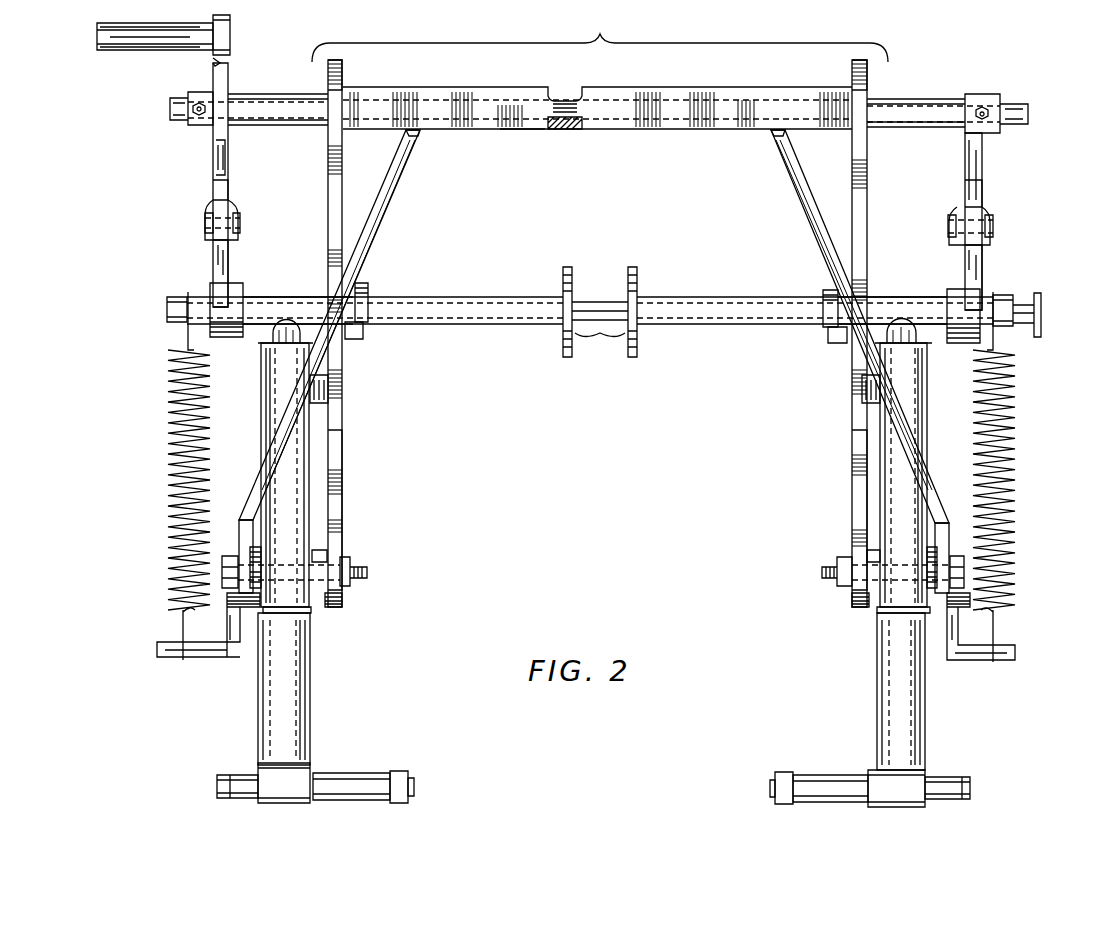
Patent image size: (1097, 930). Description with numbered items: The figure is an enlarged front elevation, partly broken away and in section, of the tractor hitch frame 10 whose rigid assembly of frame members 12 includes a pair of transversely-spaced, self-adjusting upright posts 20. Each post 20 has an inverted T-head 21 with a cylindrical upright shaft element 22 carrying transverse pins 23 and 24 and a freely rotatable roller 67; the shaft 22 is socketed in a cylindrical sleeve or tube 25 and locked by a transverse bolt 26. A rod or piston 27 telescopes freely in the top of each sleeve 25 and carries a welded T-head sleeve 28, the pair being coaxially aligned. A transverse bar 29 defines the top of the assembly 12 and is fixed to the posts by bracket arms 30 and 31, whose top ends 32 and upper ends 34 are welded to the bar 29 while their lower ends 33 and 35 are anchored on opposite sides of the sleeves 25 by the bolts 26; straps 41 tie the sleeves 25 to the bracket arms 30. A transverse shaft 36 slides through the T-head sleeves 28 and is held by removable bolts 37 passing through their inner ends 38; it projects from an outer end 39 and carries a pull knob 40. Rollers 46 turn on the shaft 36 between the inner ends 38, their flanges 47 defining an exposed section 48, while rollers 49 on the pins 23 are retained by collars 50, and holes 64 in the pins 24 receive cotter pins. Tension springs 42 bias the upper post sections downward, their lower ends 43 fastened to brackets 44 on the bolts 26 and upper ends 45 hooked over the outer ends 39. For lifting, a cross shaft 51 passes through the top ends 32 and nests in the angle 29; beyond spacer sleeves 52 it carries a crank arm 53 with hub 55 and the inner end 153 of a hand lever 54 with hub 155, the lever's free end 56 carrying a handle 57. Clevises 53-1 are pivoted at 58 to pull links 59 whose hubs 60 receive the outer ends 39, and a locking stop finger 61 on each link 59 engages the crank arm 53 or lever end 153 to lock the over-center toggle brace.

The tractor hitch frame 10 is at (600, 37).
The assembly of frame members 12 is at (658, 131).
The self-adjusting upright post 20 is at (305, 610).
The inverted T-head 21 is at (312, 775).
The cylindrical upright shaft element 22 is at (310, 669).
The transversely-extending pin 23 is at (415, 783).
The transversely-extending pin 24 is at (218, 781).
The cylindrical sleeve or tube 25 is at (343, 504).
The transverse bolt 26 is at (368, 570).
The rod or piston 27 is at (287, 320).
The T-head sleeve 28 is at (255, 296).
The transverse bar 29 is at (522, 131).
The bracket arm 30 is at (343, 182).
The bracket arm 31 is at (381, 233).
The top end of bracket arm 32 is at (344, 74).
The lower end of bracket arm 33 is at (344, 600).
The upper end of bracket arm 34 is at (416, 136).
The lower end of bracket arm 35 is at (240, 540).
The transverse shaft 36 is at (592, 300).
The removable bolt 37 is at (369, 290).
The inner end of T-head sleeve 38 is at (358, 341).
The outer end of T-head sleeve 39 is at (172, 296).
The pull knob 40 is at (1042, 311).
The strap 41 is at (330, 388).
The tension spring 42 is at (168, 507).
The lower end of spring 43 is at (181, 625).
The bracket 44 is at (172, 658).
The upper end of spring 45 is at (186, 334).
The roller 46 is at (480, 297).
The transverse flange 47 is at (567, 266).
The exposed section of transverse shaft 48 is at (600, 340).
The roller 49 is at (370, 774).
The collar 50 is at (402, 770).
The cross shaft 51 is at (566, 100).
The spacer sleeve 52 is at (289, 97).
The crank arm 53 is at (983, 166).
The clevis or fork 53-1 is at (240, 209).
The hand lever 54 is at (204, 72).
The hub 55 is at (988, 94).
The free end of lever 56 is at (222, 64).
The handle 57 is at (100, 50).
The pivot 58 is at (204, 223).
The pull link 59 is at (213, 258).
The hub 60 is at (230, 338).
The locking stop finger 61 is at (214, 191).
The hole 64 is at (230, 774).
The roller 67 is at (283, 674).
The inner end of hand lever 153 is at (216, 158).
The hub 155 is at (200, 125).